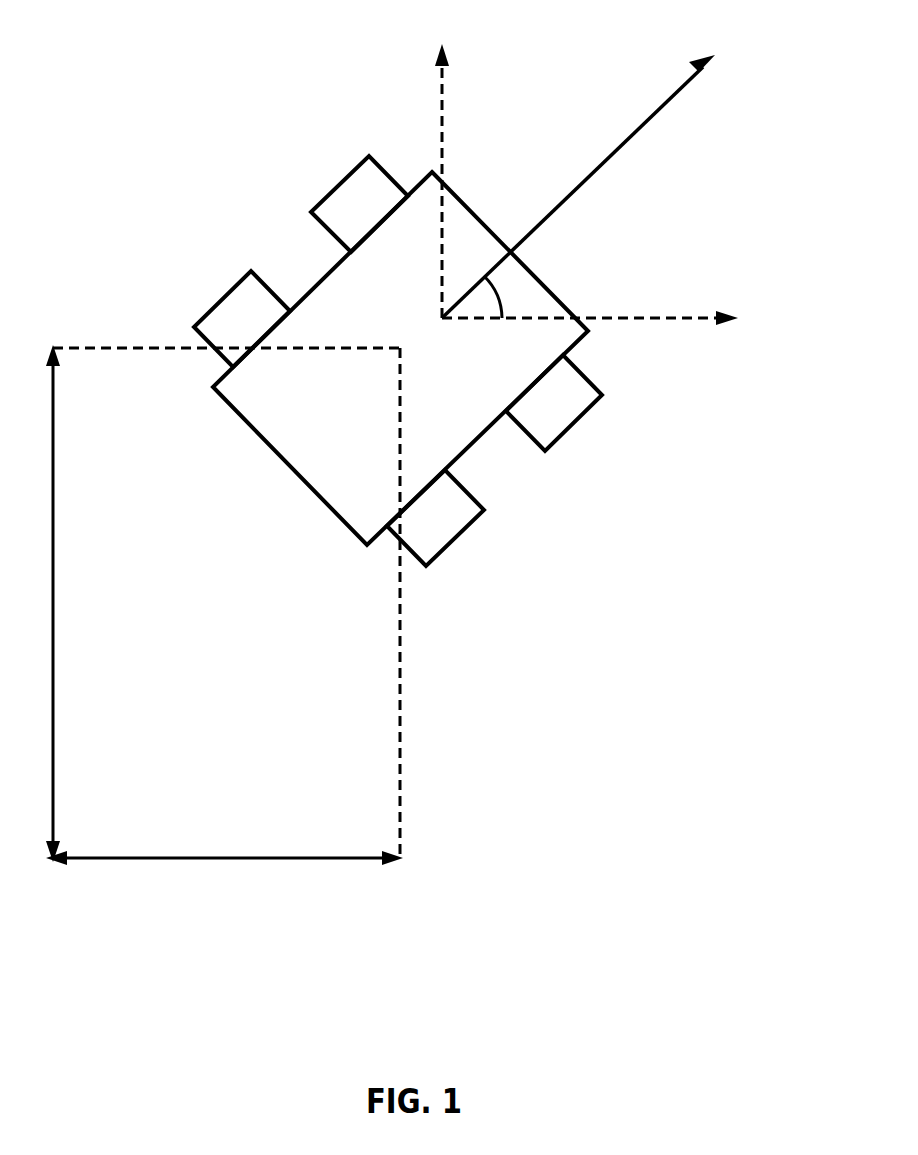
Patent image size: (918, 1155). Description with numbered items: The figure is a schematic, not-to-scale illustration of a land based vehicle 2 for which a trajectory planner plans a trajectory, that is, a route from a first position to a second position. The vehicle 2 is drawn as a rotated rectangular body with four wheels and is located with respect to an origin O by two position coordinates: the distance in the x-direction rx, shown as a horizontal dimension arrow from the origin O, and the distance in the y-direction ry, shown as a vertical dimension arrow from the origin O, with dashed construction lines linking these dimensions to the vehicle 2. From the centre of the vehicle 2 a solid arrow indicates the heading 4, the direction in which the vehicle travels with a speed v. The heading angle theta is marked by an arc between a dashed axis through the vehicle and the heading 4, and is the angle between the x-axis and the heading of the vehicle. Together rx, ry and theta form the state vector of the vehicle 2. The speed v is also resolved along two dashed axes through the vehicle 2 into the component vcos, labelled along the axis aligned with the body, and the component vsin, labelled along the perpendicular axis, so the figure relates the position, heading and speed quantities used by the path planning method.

The vehicle 2 is at (475, 445).
The heading 4 is at (627, 140).
The origin O is at (208, 621).
The distance in the x-direction rx is at (224, 844).
The distance in the y-direction ry is at (66, 603).
The velocity component v cos theta vcos is at (442, 165).
The velocity component v sin theta vsin is at (598, 336).
The heading angle theta is at (503, 297).
The speed v is at (734, 57).